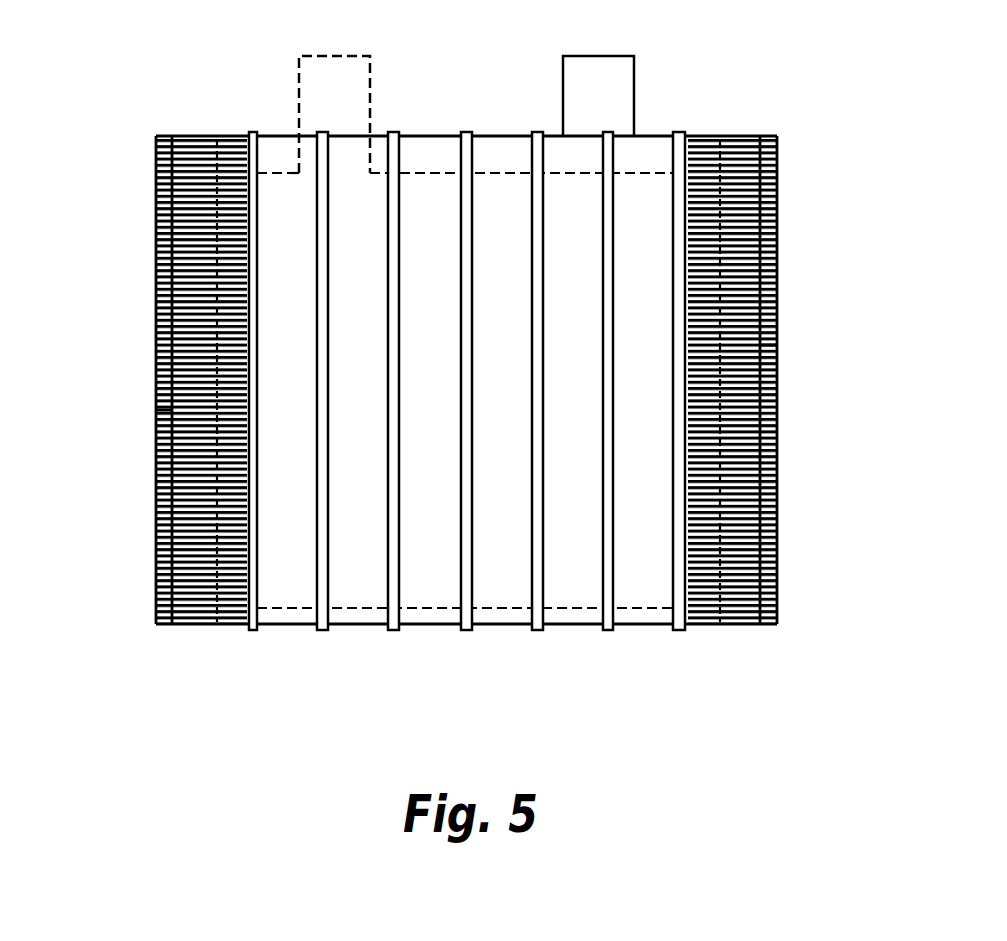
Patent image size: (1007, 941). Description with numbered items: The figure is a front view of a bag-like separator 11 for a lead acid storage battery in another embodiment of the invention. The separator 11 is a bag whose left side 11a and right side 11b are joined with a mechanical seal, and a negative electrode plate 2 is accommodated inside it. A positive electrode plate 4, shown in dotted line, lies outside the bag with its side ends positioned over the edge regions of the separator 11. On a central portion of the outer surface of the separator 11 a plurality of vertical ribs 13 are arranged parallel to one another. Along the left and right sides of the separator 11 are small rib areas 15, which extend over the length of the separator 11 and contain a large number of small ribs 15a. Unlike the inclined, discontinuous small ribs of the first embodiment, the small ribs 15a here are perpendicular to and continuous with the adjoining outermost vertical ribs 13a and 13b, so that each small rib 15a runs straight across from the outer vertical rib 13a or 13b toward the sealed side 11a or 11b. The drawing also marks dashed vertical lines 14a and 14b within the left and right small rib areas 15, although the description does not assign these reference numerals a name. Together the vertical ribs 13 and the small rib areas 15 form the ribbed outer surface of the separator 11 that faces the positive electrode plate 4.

The negative electrode plate 2 is at (620, 72).
The positive electrode plate 4 is at (350, 77).
The bag-like separator 11 is at (724, 123).
The left side 11a is at (157, 298).
The right side 11b is at (778, 233).
The vertical ribs 13 is at (462, 163).
The vertical rib 13a is at (258, 583).
The vertical rib 13b is at (673, 583).
The first current collector 14a is at (157, 540).
The second current collector 14b is at (777, 513).
The small rib areas 15 is at (158, 418).
The small ribs 15a is at (158, 192).